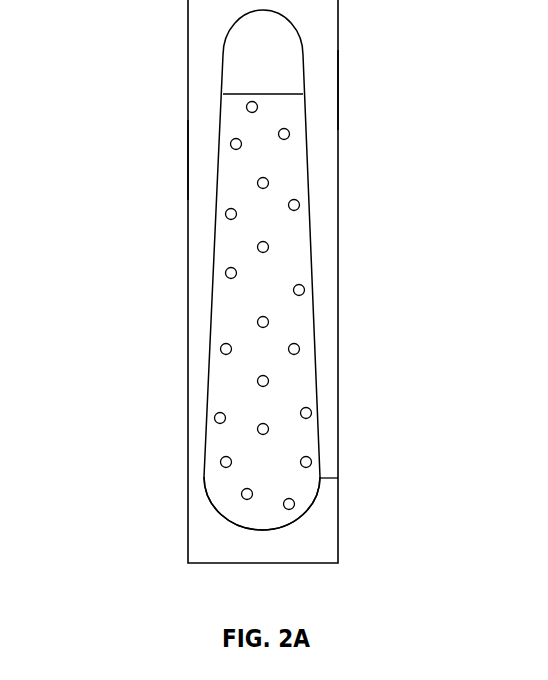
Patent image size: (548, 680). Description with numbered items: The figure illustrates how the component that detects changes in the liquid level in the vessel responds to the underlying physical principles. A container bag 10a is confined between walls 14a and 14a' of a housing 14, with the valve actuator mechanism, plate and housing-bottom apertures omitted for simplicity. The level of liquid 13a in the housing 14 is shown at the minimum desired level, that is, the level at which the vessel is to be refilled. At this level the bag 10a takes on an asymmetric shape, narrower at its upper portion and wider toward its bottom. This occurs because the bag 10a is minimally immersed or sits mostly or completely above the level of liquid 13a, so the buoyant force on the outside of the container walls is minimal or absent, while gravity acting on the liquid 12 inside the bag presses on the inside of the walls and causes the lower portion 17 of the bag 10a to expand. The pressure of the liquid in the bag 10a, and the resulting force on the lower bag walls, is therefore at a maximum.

The housing 14 is at (157, 25).
The wall 14a is at (124, 139).
The wall 14a' is at (398, 66).
The container bag 10a is at (213, 290).
The liquid 12 is at (273, 279).
The level of liquid 13a is at (202, 478).
The lower portion 17 is at (320, 457).